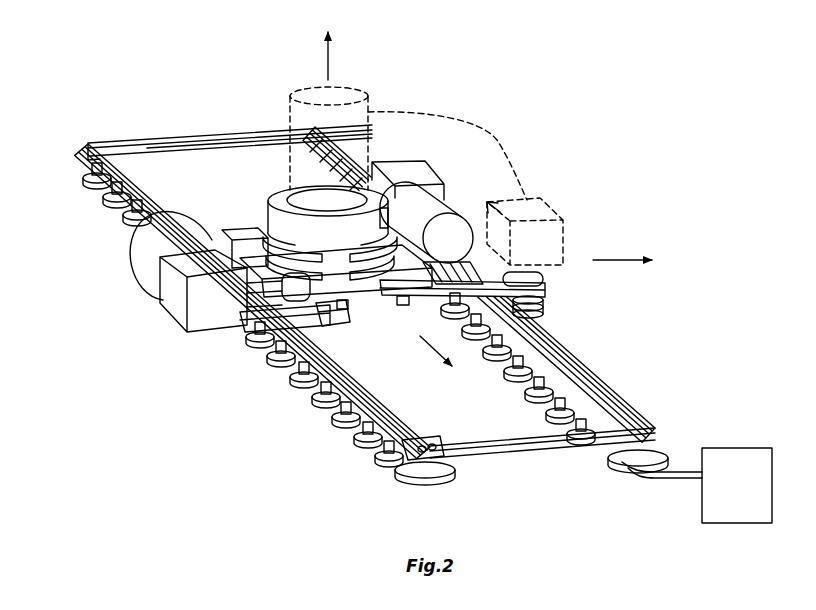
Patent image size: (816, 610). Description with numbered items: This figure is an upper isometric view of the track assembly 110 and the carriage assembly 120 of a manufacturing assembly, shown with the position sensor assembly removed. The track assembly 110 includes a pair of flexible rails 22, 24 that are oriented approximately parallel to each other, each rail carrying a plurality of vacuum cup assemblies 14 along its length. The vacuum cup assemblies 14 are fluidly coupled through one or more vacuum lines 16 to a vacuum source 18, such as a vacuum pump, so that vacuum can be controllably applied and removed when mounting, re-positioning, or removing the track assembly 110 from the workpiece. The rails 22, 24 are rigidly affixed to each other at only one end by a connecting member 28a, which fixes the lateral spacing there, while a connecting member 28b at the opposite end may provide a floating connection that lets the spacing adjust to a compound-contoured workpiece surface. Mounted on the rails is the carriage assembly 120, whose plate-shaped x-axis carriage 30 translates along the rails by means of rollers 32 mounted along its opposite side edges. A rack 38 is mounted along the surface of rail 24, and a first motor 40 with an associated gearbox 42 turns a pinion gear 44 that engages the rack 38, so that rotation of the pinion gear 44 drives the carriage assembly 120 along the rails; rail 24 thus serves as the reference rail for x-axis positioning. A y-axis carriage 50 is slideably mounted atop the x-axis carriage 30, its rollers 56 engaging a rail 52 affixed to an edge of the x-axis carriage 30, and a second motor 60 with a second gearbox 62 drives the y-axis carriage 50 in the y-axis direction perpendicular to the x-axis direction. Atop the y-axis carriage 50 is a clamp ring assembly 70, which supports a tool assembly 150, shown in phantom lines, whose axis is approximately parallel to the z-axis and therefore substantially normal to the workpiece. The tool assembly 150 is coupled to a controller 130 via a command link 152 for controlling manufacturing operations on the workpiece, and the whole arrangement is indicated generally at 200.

The track assembly 110 is at (106, 92).
The vacuum cup assemblies 14 is at (352, 412).
The vacuum lines 16 is at (667, 482).
The vacuum source 18 is at (748, 497).
The rail 22 is at (585, 362).
The rail 24 is at (378, 393).
The connecting member 28a is at (530, 450).
The connecting member 28b is at (214, 140).
The x-axis carriage 30 is at (540, 280).
The rollers 32 is at (332, 326).
The rack 38 is at (410, 408).
The first motor 40 is at (140, 275).
The gearbox 42 is at (180, 318).
The pinion gear 44 is at (286, 355).
The y-axis carriage 50 is at (234, 232).
The rail 52 is at (548, 290).
The rollers 56 is at (370, 306).
The second motor 60 is at (460, 204).
The second gearbox 62 is at (430, 167).
The clamp ring assembly 70 is at (272, 192).
The carriage assembly 120 is at (558, 148).
The controller 130 is at (548, 205).
The tool assembly 150 is at (351, 89).
The command link 152 is at (498, 135).
The machine tool 200 is at (470, 97).